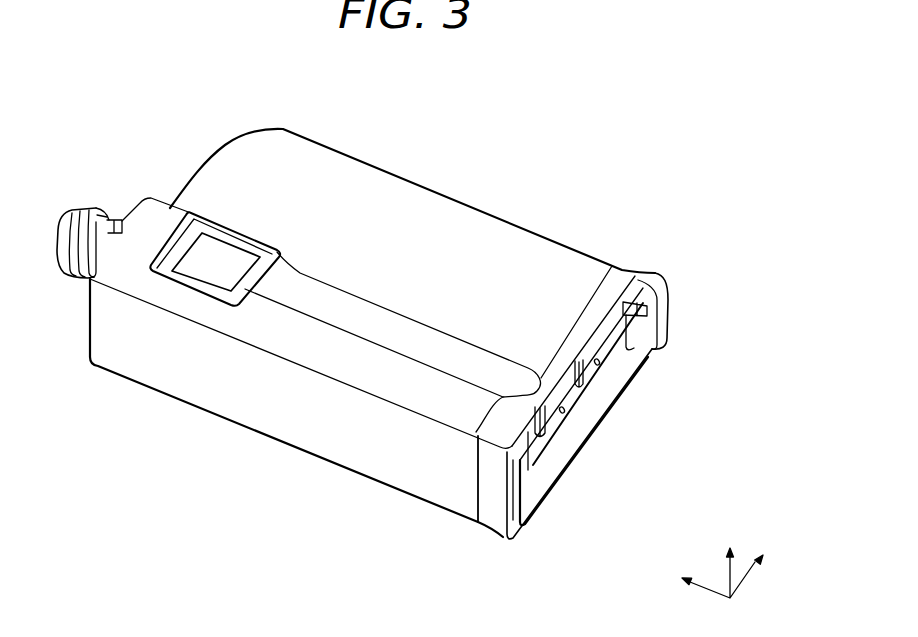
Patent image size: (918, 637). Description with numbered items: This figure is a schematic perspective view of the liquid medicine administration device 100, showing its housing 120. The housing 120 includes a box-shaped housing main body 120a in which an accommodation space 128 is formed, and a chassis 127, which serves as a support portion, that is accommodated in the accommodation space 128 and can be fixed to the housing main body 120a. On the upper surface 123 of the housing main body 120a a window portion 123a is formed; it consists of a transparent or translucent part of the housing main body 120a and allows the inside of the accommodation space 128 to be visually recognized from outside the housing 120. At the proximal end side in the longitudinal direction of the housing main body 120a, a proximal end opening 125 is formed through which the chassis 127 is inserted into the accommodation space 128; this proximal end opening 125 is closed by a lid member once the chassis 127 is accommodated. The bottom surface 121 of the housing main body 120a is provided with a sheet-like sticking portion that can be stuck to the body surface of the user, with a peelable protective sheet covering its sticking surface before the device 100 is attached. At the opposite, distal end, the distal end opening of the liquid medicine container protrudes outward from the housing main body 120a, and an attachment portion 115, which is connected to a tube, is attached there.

The liquid medicine administration device 100 is at (75, 113).
The attachment portion 115 is at (68, 278).
The housing 120 is at (709, 377).
The housing main body 120a is at (520, 318).
The bottom surface 121 is at (285, 445).
The upper surface 123 is at (425, 213).
The window portion 123a is at (220, 258).
The proximal end opening 125 is at (638, 334).
The chassis 127 is at (570, 413).
The accommodation space 128 is at (522, 495).